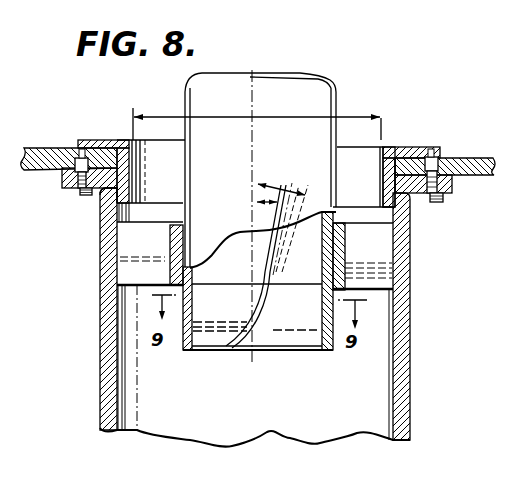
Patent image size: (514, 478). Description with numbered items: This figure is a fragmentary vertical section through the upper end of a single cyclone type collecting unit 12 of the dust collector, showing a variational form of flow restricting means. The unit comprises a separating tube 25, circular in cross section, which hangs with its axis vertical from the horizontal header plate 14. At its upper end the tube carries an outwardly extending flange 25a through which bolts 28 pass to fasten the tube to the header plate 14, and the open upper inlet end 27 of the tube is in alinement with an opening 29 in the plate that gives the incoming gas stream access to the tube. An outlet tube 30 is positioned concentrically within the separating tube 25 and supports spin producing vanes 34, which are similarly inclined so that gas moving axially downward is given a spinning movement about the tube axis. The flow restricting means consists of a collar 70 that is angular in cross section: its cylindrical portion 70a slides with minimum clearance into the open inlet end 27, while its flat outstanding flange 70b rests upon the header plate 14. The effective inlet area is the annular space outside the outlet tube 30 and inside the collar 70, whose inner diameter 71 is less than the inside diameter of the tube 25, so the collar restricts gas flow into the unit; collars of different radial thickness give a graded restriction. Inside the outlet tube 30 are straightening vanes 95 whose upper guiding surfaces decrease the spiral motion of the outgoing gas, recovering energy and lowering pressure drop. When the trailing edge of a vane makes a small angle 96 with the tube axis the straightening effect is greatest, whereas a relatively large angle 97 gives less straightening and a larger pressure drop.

The collecting unit 12 is at (257, 293).
The header plate 14 is at (42, 170).
The separating tube 25 is at (99, 360).
The outwardly extending flange 25a is at (452, 182).
The inlet end 27 is at (383, 219).
The bolts 28 is at (74, 194).
The opening 29 is at (389, 160).
The outlet tube 30 is at (337, 88).
The vanes 34 is at (112, 312).
The collar 70 is at (267, 156).
The cylindrical portion 70a is at (119, 196).
The flat outstanding flange 70b is at (89, 139).
The inner diameter 71 is at (298, 117).
The straightening vanes 95 is at (250, 343).
The small angle 96 is at (263, 202).
The large angle 97 is at (290, 174).